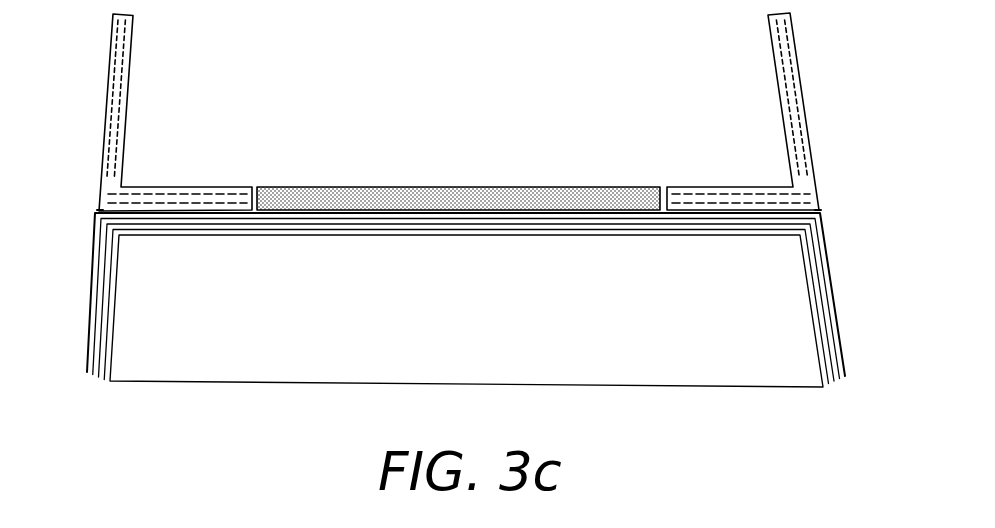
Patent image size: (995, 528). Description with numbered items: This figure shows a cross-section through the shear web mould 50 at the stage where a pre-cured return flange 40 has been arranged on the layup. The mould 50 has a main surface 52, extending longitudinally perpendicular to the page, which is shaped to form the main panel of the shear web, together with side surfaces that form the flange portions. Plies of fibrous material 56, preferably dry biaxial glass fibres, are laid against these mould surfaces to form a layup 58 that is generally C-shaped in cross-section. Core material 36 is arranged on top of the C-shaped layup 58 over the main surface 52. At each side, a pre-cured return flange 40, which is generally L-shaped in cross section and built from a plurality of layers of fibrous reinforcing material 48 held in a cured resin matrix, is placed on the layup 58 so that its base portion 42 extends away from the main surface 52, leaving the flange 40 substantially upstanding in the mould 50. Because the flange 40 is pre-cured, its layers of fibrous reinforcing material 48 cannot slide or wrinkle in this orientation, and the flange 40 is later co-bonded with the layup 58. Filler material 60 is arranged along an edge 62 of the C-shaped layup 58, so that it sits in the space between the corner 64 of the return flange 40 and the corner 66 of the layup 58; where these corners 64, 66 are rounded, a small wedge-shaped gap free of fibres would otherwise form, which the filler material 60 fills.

The core material 36 is at (462, 205).
The pre-cured return flange 40 is at (214, 142).
The base portion 42 is at (99, 97).
The layers of fibrous reinforcing material 48 is at (120, 70).
The shear web mould 50 is at (207, 409).
The main surface 52 is at (493, 237).
The fibrous material 56 is at (642, 223).
The layup 58 is at (377, 219).
The filler material 60 is at (100, 210).
The edge 62 is at (135, 221).
The corner 64 is at (136, 175).
The corner 66 is at (100, 213).